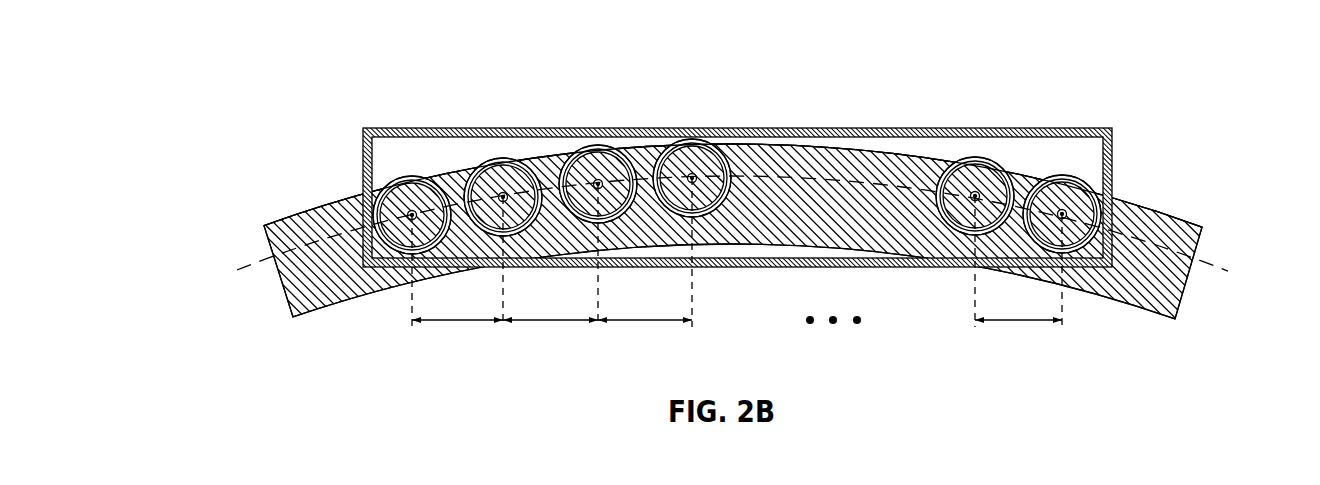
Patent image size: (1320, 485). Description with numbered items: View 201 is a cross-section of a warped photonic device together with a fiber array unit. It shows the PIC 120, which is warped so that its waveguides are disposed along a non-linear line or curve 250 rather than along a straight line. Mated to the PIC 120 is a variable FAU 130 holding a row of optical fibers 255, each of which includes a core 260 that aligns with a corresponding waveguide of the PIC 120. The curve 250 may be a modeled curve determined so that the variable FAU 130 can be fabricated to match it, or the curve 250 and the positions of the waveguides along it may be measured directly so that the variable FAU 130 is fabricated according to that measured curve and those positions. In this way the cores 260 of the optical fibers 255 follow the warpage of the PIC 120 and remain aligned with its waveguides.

The view 201 is at (1232, 65).
The PIC 120 is at (333, 308).
The variable FAU 130 is at (1067, 177).
The curve 250 is at (253, 257).
The optical fibers 255 is at (507, 160).
The cores 260 is at (363, 193).